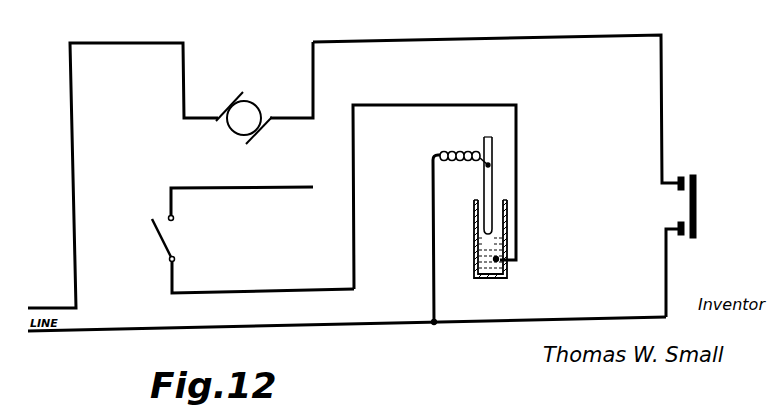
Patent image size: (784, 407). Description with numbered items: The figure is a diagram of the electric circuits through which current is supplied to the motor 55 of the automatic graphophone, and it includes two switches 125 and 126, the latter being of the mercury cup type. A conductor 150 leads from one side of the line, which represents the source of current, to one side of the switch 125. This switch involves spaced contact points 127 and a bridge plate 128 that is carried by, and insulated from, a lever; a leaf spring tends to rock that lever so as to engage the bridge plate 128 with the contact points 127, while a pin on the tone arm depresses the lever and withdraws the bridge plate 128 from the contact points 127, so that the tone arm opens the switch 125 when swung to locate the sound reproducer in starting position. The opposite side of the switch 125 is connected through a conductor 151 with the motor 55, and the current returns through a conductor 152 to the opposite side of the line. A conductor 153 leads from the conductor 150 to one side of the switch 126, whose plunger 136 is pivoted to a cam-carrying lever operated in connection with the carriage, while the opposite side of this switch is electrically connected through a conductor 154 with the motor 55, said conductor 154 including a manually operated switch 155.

The conductor 152 is at (131, 43).
The motor 55 is at (253, 112).
The conductor 151 is at (664, 106).
The switch 125 is at (661, 207).
The contact points 127 is at (684, 177).
The bridge plate 128 is at (698, 203).
The conductor 150 is at (344, 325).
The manually operated switch 155 is at (168, 241).
The conductor 154 is at (518, 178).
The conductor 153 is at (434, 263).
The plunger 136 is at (493, 146).
The switch 126 is at (508, 230).